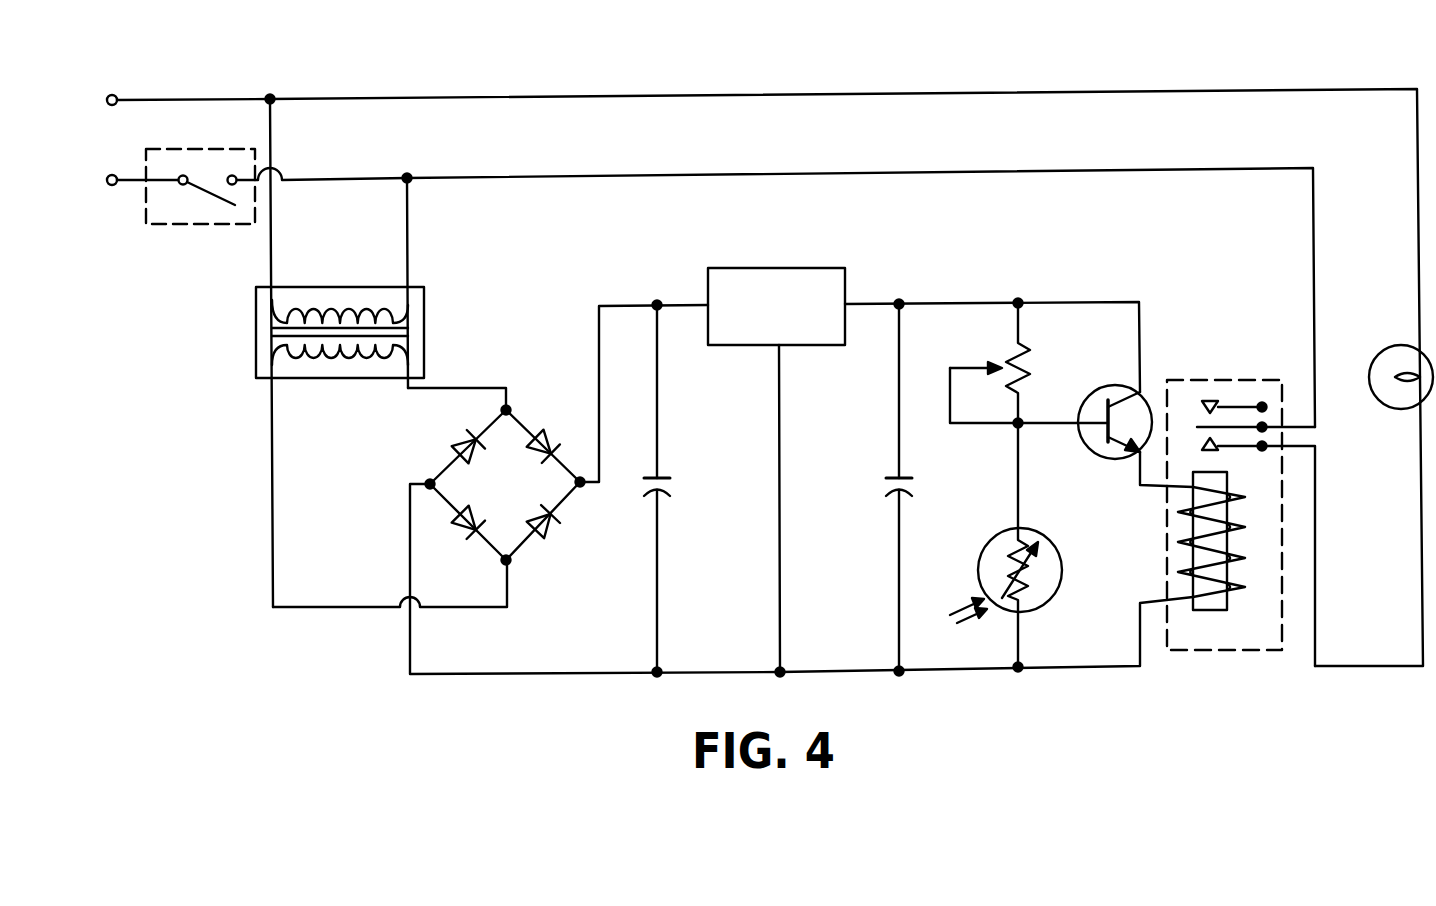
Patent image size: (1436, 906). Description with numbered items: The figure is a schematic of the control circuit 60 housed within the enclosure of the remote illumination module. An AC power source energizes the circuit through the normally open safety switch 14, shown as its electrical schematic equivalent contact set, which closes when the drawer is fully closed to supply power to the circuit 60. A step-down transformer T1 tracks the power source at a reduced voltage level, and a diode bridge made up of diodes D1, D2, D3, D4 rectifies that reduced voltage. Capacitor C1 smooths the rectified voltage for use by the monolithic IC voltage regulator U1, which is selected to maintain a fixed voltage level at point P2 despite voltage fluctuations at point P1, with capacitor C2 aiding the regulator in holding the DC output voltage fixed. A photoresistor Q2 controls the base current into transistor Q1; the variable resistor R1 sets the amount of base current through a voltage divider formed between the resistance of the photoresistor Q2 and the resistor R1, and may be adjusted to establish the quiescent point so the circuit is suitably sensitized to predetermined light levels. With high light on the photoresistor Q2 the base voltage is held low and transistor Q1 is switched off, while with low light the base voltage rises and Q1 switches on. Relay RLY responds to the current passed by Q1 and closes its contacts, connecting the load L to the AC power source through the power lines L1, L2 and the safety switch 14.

The control circuit 60 is at (853, 78).
The power line L1 is at (167, 102).
The power line L2 is at (687, 297).
The safety switch 14 is at (192, 228).
The step-down transformer T1 is at (423, 318).
The diode D1 is at (553, 437).
The diode D2 is at (460, 532).
The diode D3 is at (555, 528).
The diode D4 is at (460, 440).
The point P1 is at (652, 289).
The point P2 is at (992, 330).
The monolithic IC voltage regulator U1 is at (777, 268).
The capacitor C1 is at (677, 491).
The capacitor C2 is at (919, 490).
The variable resistor R1 is at (1029, 363).
The transistor Q1 is at (1135, 421).
The photoresistor Q2 is at (1014, 547).
The relay RLY is at (1228, 652).
The load L is at (1401, 364).